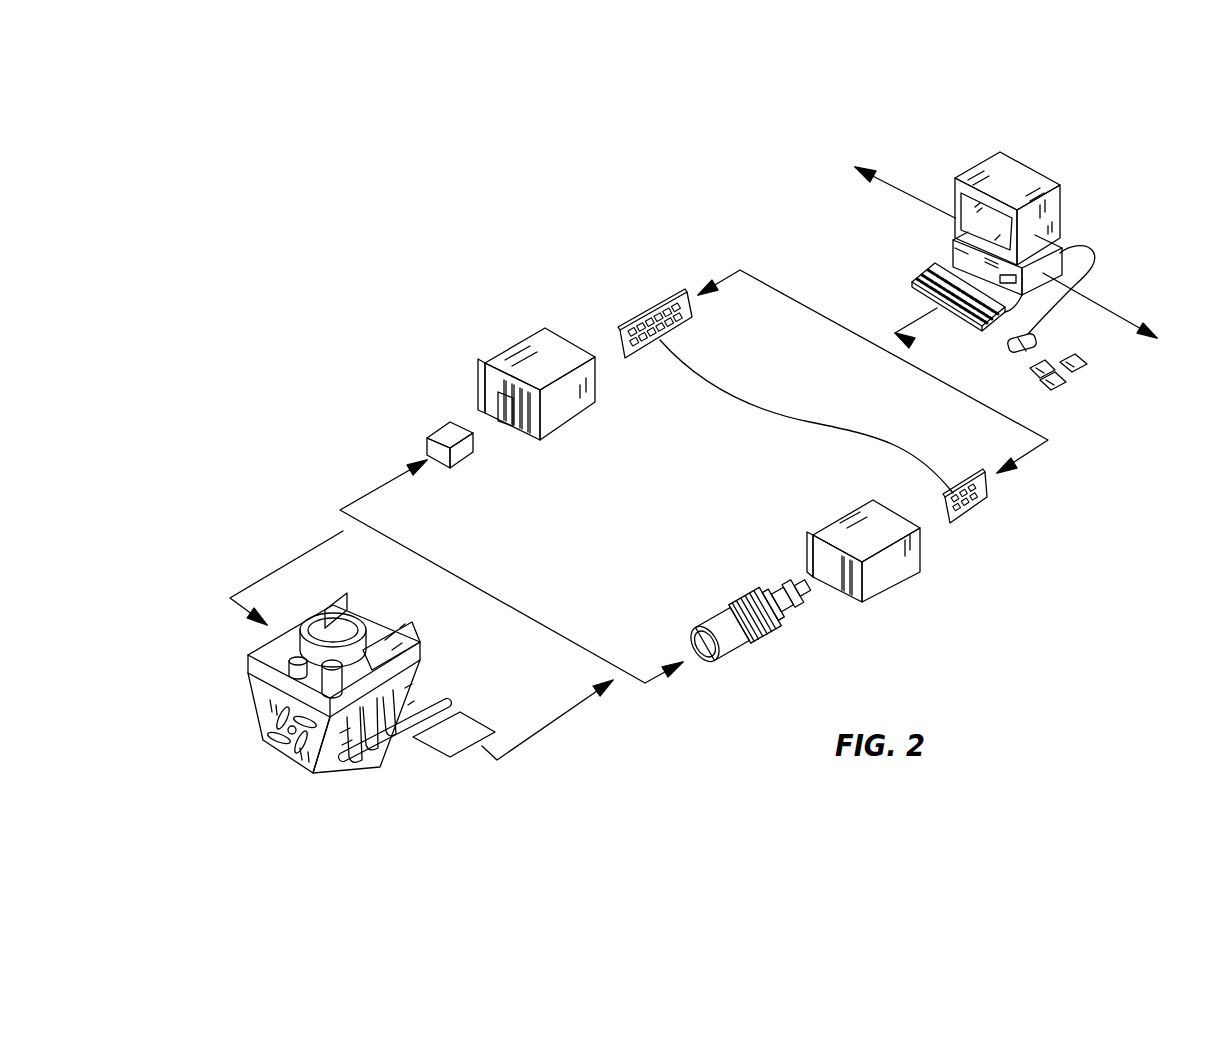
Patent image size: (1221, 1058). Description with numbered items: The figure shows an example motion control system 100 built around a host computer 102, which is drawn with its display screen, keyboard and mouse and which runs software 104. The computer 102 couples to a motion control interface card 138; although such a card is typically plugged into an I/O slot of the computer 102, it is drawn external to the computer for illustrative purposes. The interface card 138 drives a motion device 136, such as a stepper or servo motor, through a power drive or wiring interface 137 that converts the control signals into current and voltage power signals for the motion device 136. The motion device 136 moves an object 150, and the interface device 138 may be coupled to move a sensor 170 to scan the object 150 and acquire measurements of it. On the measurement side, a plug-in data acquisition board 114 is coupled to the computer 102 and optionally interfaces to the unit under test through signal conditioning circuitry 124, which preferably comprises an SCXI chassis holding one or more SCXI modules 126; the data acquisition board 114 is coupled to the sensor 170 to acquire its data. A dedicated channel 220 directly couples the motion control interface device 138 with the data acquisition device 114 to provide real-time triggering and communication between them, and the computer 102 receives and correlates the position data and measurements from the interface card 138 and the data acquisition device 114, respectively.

The system 100 is at (398, 218).
The host computer 102 is at (1008, 176).
The software 104 is at (1065, 390).
The data acquisition board 114 is at (648, 320).
The cable 220 is at (772, 407).
The signal conditioning circuitry 124 is at (510, 356).
The SCXI module 126 is at (512, 420).
The sensor 170 is at (435, 430).
The motion control interface card 138 is at (972, 513).
The power drive or wiring interface 137 is at (887, 575).
The motion device 136 is at (757, 634).
The object 150 is at (273, 736).